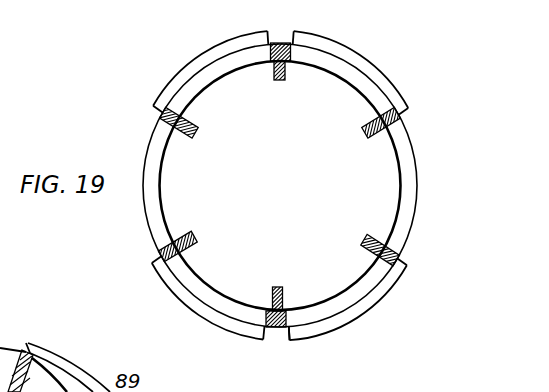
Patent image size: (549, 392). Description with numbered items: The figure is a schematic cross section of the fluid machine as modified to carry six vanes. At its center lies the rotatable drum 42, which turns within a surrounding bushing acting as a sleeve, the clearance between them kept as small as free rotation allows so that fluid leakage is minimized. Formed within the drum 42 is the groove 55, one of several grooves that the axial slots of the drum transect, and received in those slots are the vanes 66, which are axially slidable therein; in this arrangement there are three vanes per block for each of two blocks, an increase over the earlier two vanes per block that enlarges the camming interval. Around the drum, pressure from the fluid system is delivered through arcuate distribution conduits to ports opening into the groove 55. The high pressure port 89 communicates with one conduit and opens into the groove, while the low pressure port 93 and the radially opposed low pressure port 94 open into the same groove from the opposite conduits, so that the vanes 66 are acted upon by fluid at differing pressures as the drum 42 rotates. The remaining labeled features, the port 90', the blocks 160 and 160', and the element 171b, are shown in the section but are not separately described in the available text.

The rotatable drum 42 is at (295, 160).
The groove 55 is at (350, 75).
The vane 66 is at (280, 82).
The high pressure port 89 is at (365, 62).
The low pressure port 93 is at (198, 60).
The low pressure port 94 is at (363, 315).
The arcuate segment 90' is at (208, 299).
The spacer block 160 is at (283, 33).
The spacer block 160' is at (278, 341).
The end face 171b is at (335, 322).